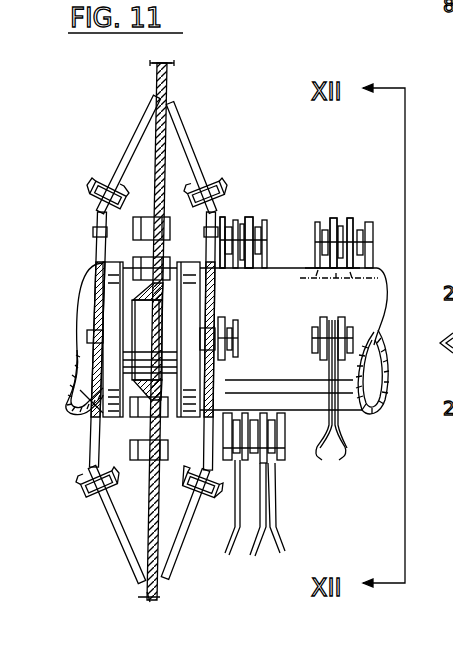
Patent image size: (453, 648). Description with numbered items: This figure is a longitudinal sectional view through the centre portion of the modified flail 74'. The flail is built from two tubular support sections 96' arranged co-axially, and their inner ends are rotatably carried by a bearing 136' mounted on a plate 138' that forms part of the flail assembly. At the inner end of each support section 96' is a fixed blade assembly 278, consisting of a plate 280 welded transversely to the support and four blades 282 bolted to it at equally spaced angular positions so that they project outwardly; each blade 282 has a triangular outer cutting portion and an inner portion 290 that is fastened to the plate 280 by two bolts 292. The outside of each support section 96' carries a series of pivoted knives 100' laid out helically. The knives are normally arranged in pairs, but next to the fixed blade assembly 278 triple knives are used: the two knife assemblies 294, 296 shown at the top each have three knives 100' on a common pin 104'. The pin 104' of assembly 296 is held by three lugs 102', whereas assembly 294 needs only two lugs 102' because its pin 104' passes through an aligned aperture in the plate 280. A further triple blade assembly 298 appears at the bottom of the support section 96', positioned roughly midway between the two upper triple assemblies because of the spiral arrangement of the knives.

The flail 74' is at (227, 72).
The tubular support section 96' is at (227, 339).
The pivoted knife 100' is at (347, 410).
The lug 102' is at (333, 291).
The pin 104' is at (310, 235).
The bearing 136' is at (76, 341).
The plate 138' is at (184, 331).
The fixed blade assembly 278 is at (223, 178).
The plate 280 is at (225, 357).
The blade 282 is at (162, 97).
The inner portion 290 is at (195, 180).
The bolt 292 is at (187, 493).
The knife assembly 294 is at (238, 210).
The knife assembly 296 is at (339, 214).
The triple blade assembly 298 is at (284, 466).